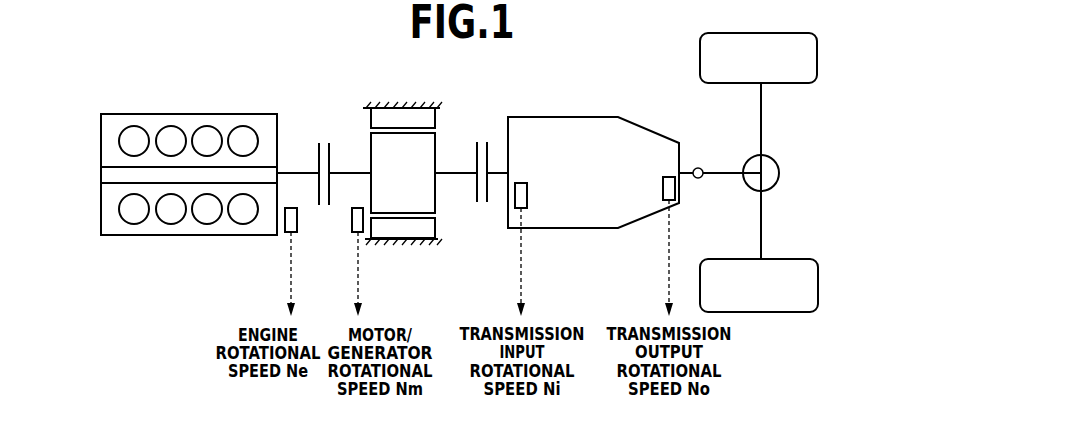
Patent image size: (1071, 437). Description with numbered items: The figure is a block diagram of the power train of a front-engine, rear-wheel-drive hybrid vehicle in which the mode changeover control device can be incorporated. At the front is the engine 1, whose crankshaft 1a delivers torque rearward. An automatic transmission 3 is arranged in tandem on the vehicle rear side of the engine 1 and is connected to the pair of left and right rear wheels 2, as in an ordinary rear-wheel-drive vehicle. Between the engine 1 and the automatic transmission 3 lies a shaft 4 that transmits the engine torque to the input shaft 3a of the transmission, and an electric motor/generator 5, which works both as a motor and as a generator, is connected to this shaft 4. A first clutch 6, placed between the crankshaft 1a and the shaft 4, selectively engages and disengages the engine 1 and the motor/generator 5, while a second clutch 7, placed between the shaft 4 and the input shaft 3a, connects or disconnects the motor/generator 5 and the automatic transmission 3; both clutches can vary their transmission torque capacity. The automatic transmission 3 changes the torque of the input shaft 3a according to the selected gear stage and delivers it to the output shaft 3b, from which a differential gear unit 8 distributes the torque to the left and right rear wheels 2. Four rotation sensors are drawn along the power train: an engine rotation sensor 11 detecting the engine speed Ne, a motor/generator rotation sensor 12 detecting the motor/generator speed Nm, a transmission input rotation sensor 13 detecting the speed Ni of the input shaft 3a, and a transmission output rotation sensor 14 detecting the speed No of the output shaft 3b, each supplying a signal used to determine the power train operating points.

The engine 1 is at (161, 113).
The crankshaft 1a is at (292, 170).
The rear wheels 2 is at (700, 60).
The automatic transmission 3 is at (577, 114).
The input shaft 3a is at (497, 170).
The output shaft 3b is at (687, 167).
The shaft 4 is at (452, 170).
The motor/generator 5 is at (389, 105).
The first clutch 6 is at (321, 140).
The second clutch 7 is at (481, 206).
The differential gear unit 8 is at (780, 172).
The engine rotation sensor 11 is at (288, 236).
The motor/generator rotation sensor 12 is at (355, 236).
The transmission input rotation sensor 13 is at (528, 196).
The transmission output rotation sensor 14 is at (663, 191).